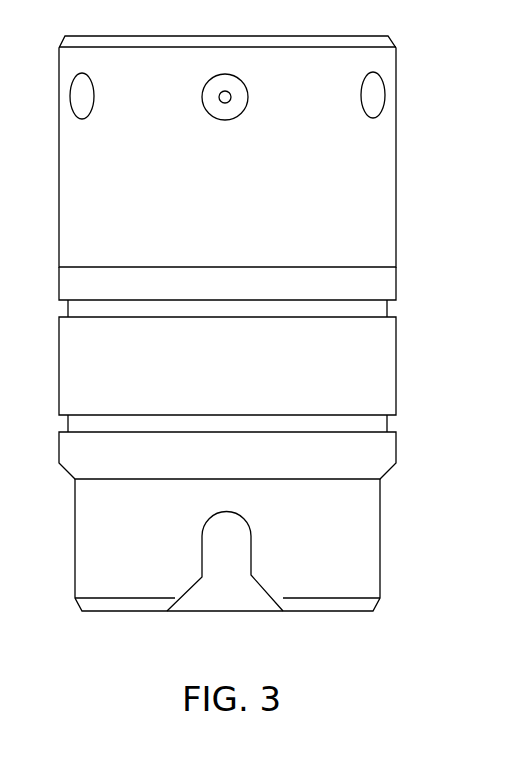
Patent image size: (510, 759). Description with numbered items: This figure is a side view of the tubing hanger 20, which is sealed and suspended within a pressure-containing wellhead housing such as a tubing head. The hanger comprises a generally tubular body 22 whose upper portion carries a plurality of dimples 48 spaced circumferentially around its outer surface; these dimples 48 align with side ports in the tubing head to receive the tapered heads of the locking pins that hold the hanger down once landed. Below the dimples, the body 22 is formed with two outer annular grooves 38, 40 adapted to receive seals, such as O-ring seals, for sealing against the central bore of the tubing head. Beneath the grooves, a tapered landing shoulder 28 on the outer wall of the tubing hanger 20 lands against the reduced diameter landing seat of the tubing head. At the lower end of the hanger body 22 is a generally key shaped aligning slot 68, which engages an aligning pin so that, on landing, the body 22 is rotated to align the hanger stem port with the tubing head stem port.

The tubing hanger 20 is at (263, 323).
The tubular body 22 is at (383, 214).
The outer annular groove 38 is at (397, 310).
The outer annular groove 40 is at (388, 425).
The tapered landing shoulder 28 is at (392, 470).
The dimples 48 is at (222, 110).
The aligning slot 68 is at (251, 548).